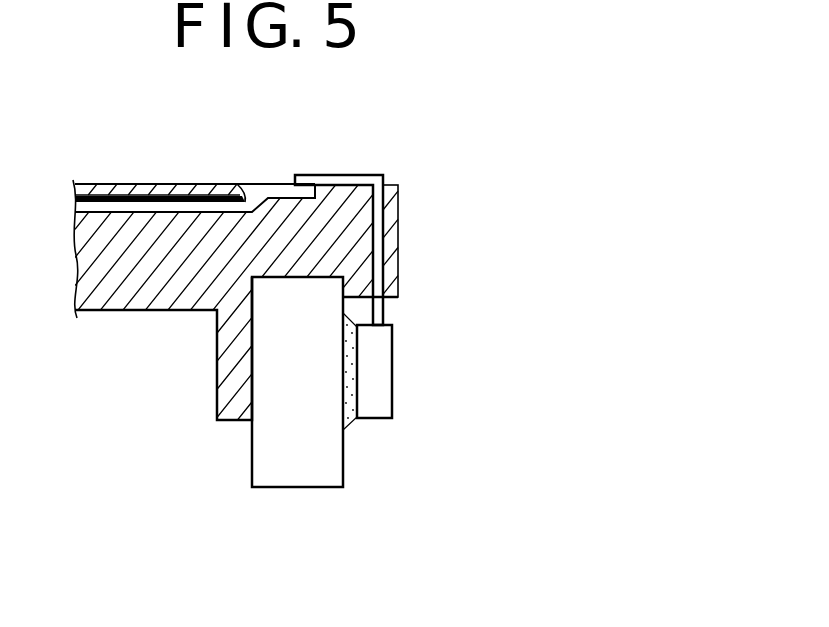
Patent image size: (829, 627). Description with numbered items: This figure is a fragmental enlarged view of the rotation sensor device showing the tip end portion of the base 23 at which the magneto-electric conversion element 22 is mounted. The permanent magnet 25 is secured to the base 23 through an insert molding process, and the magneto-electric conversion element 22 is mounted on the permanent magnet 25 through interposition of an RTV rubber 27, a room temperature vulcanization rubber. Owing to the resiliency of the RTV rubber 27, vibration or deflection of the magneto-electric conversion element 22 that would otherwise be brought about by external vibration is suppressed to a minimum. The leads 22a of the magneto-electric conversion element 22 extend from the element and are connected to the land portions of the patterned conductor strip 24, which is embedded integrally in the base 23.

The magneto-electric conversion element 22 is at (377, 362).
The leads 22a is at (376, 233).
The base 23 is at (118, 288).
The patterned conductor strip 24 is at (233, 185).
The permanent magnet 25 is at (322, 460).
The RTV rubber 27 is at (348, 418).